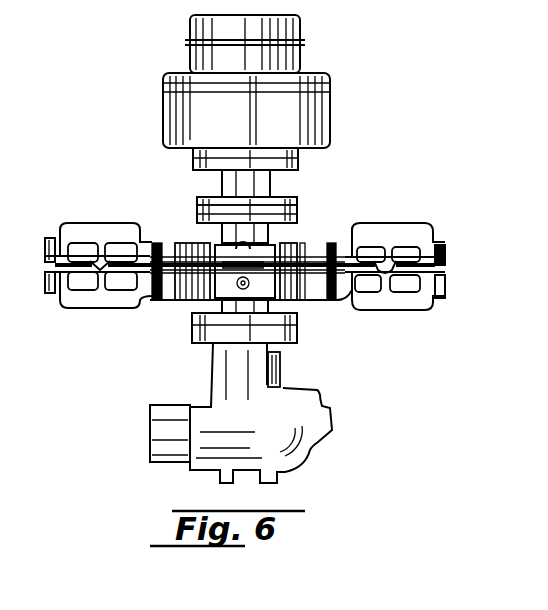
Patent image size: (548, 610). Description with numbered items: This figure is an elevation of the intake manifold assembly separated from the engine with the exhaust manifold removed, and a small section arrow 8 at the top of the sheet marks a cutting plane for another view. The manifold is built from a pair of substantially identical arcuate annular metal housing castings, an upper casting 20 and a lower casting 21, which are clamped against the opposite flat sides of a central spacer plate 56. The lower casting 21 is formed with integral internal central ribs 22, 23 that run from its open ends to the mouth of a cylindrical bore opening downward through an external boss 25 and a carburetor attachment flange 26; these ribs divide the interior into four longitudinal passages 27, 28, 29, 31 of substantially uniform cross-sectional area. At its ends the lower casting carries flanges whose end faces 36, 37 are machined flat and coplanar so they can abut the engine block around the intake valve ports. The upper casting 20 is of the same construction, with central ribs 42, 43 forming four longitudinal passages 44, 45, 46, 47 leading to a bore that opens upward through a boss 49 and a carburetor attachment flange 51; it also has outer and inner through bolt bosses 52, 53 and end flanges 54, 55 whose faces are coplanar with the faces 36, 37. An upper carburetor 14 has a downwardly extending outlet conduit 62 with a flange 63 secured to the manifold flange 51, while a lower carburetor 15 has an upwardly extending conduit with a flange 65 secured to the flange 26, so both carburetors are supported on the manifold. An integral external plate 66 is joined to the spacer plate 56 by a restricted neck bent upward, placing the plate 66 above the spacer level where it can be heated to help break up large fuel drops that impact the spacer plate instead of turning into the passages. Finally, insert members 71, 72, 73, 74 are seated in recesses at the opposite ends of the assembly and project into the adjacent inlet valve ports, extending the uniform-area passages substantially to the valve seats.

The section line 8 is at (72, 9).
The upper carburetor 14 is at (340, 120).
The lower carburetor 15 is at (325, 396).
The upper casting 20 is at (247, 256).
The lower casting 21 is at (334, 299).
The internal central rib 22 is at (390, 283).
The internal central rib 23 is at (106, 281).
The external boss 25 is at (222, 305).
The carburetor attachment flange 26 is at (197, 325).
The longitudinal passage 27 is at (416, 292).
The longitudinal passage 28 is at (374, 292).
The longitudinal passage 29 is at (132, 291).
The longitudinal passage 31 is at (85, 290).
The end face 36 is at (430, 305).
The end face 37 is at (62, 303).
The central rib 42 is at (388, 266).
The central rib 43 is at (110, 247).
The longitudinal passage 44 is at (396, 250).
The longitudinal passage 45 is at (384, 256).
The longitudinal passage 46 is at (126, 248).
The longitudinal passage 47 is at (80, 245).
The boss 49 is at (271, 234).
The carburetor attachment flange 51 is at (299, 214).
The outer through bolt boss 52 is at (440, 250).
The inner through bolt boss 53 is at (320, 255).
The end flange 54 is at (430, 236).
The end flange 55 is at (70, 228).
The spacer plate 56 is at (310, 270).
The outlet conduit 62 is at (228, 181).
The flange 63 is at (295, 200).
The flange 65 is at (283, 345).
The external plate 66 is at (235, 248).
The insert member 71 is at (48, 258).
The insert member 72 is at (181, 270).
The insert member 73 is at (358, 247).
The insert member 74 is at (445, 262).